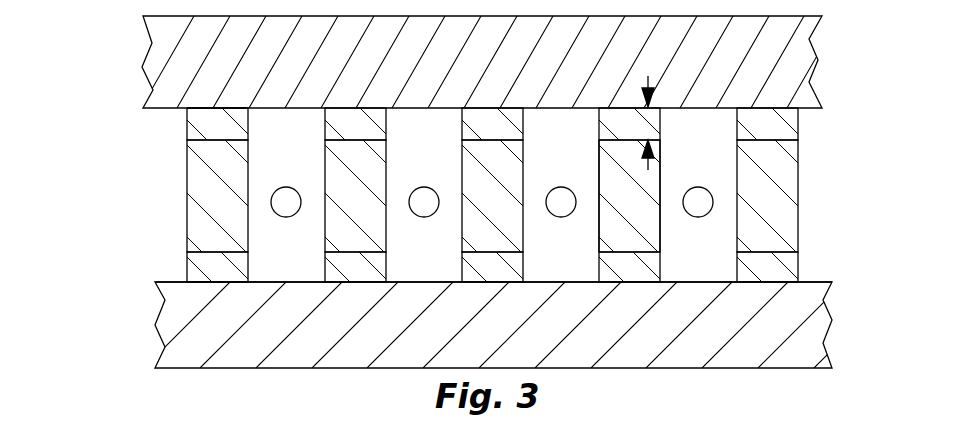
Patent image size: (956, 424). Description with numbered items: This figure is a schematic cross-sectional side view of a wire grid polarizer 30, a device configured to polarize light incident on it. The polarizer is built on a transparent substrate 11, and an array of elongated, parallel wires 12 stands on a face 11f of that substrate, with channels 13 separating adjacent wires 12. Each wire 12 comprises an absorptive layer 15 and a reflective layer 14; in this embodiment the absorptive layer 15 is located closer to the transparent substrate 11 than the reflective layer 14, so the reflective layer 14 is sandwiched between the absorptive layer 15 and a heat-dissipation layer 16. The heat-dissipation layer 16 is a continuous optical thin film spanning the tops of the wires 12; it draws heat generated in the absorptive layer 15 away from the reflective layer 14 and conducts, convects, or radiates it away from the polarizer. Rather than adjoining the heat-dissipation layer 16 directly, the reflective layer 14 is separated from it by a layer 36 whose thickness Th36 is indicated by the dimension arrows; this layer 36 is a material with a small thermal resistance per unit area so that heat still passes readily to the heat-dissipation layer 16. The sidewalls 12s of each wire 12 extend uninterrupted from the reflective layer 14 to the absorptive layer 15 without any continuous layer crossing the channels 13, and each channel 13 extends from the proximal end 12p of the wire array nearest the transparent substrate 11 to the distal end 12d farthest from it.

The heat-dissipation layer 16 is at (496, 70).
The transparent substrate 11 is at (477, 334).
The wires 12 is at (430, 195).
The layer 36 is at (200, 136).
The reflective layer 14 is at (227, 218).
The absorptive layer 15 is at (227, 280).
The channels 13 is at (492, 202).
The distal end 12d is at (225, 106).
The proximal end 12p is at (217, 282).
The sidewalls 12s is at (598, 221).
The face 11f is at (174, 281).
The wire grid polarizer 30 is at (95, 302).
The thickness of layer 36 Th36 is at (651, 111).